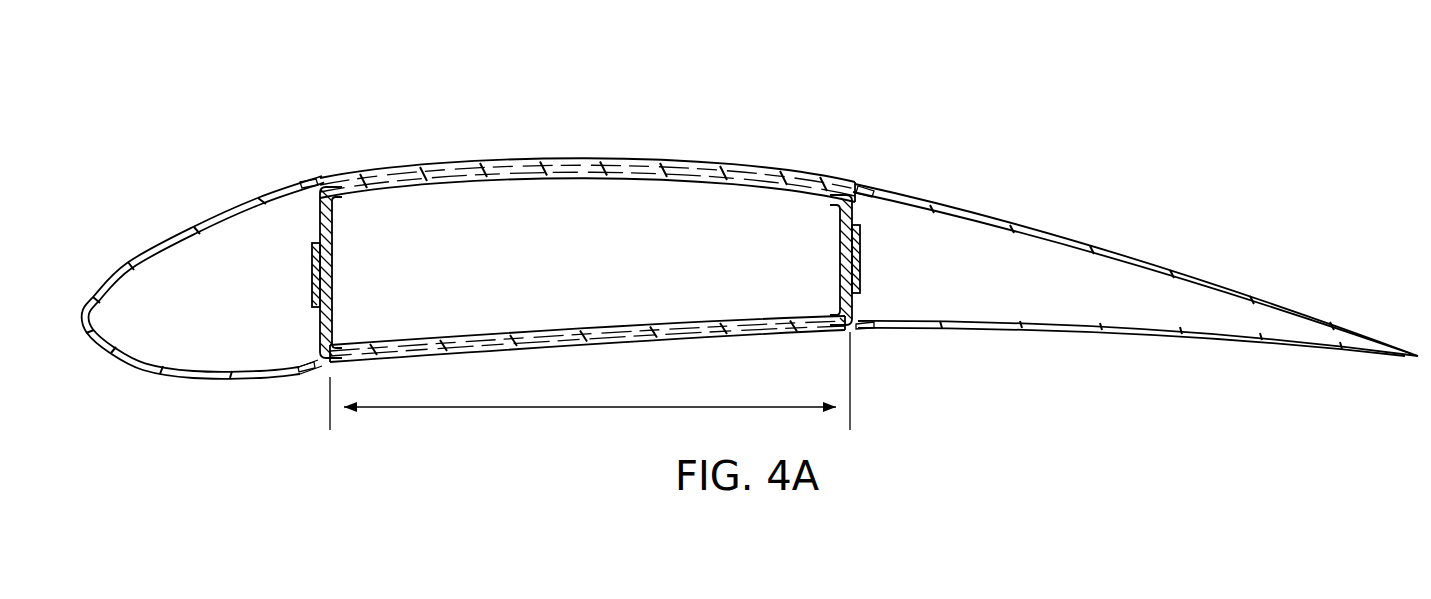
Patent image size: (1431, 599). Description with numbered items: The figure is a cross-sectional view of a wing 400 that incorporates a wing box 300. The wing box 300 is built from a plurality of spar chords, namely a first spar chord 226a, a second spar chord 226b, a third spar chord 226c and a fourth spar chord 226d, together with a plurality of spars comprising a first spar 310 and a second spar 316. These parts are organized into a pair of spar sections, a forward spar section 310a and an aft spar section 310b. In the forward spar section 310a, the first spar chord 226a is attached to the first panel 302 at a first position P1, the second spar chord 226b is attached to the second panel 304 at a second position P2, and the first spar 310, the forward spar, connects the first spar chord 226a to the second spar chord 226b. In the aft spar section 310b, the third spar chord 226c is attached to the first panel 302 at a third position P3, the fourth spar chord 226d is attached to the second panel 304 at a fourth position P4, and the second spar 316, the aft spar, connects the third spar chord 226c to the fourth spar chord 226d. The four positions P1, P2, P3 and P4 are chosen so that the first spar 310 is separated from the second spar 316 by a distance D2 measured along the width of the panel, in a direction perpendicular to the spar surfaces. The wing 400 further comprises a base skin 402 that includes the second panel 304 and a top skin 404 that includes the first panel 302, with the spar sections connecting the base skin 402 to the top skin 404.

The wing 400 is at (506, 106).
The first panel 302 is at (679, 159).
The second panel 304 is at (240, 385).
The wing box 300 is at (558, 267).
The first spar 310 is at (311, 272).
The forward spar section 310a is at (362, 275).
The aft spar section 310b is at (813, 256).
The second spar 316 is at (861, 260).
The first spar chord 226a is at (319, 222).
The second spar chord 226b is at (320, 318).
The third spar chord 226c is at (855, 213).
The fourth spar chord 226d is at (853, 312).
The base skin 402 is at (1043, 330).
The top skin 404 is at (1040, 235).
The first position P1 is at (318, 190).
The second position P2 is at (318, 363).
The third position P3 is at (853, 192).
The fourth position P4 is at (856, 331).
The distance D2 is at (590, 387).